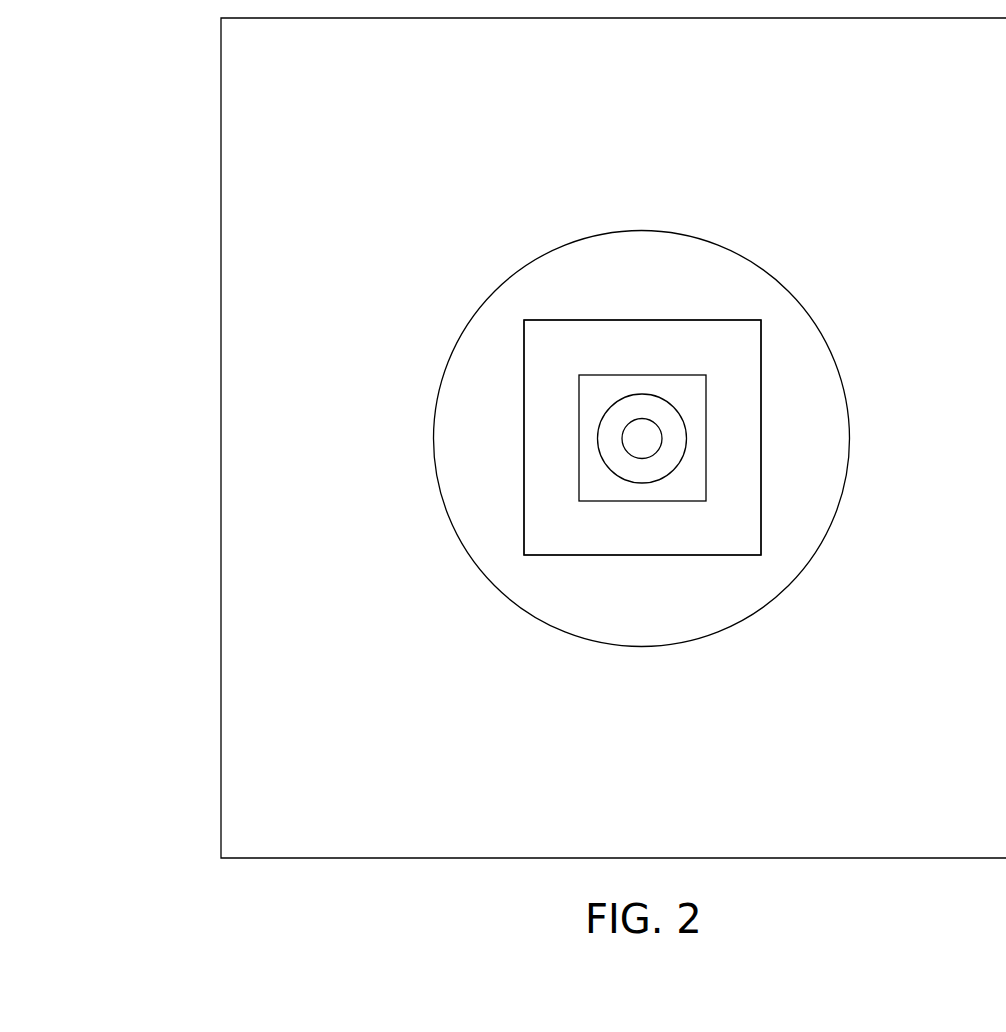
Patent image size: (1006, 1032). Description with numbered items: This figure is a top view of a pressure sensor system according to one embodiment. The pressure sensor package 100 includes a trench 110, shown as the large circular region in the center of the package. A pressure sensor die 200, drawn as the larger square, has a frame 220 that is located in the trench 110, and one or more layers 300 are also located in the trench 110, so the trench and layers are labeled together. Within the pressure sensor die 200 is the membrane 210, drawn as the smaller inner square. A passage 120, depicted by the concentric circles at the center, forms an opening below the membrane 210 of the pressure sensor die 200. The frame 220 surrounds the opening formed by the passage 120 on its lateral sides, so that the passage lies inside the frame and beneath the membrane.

The pressure sensor package 100 is at (221, 412).
The trench 110 is at (690, 439).
The layers 300 is at (817, 408).
The pressure sensor die 200 is at (578, 318).
The membrane 210 is at (686, 388).
The frame 220 is at (737, 475).
The passage 120 is at (640, 438).